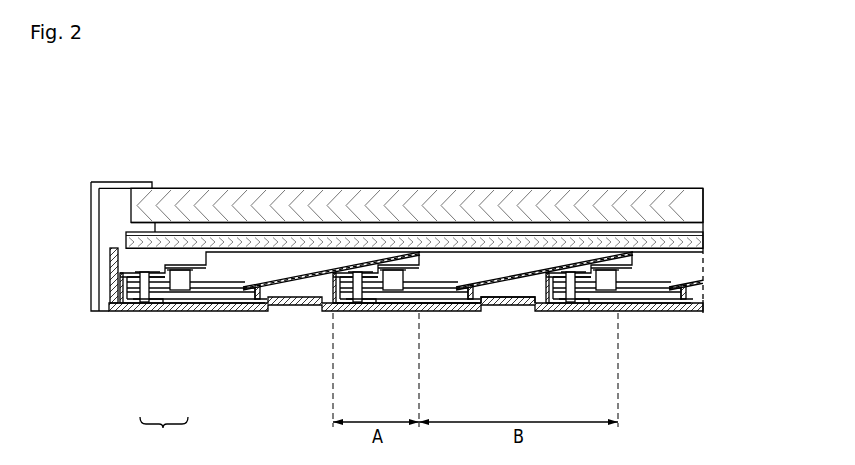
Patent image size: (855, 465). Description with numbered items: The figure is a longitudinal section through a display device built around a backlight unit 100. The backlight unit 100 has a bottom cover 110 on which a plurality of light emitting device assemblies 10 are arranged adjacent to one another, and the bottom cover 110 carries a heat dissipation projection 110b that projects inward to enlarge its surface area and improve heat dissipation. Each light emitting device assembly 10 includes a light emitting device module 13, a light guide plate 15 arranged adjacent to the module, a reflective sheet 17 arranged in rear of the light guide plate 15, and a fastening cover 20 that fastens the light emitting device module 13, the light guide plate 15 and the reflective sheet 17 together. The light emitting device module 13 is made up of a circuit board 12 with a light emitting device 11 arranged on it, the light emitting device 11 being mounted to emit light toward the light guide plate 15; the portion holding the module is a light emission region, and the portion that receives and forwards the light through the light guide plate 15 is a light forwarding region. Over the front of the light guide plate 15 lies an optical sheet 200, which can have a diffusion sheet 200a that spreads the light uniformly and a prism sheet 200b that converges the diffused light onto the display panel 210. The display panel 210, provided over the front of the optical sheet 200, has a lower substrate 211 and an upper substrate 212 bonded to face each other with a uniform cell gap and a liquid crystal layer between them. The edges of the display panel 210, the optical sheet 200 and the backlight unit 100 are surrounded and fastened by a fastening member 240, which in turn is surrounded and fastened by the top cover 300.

The light emitting device assembly 10 is at (206, 287).
The light emitting device 11 is at (183, 283).
The circuit board 12 is at (152, 303).
The light emitting device module 13 is at (164, 436).
The light guide plate 15 is at (225, 282).
The reflective sheet 17 is at (257, 300).
The fastening cover 20 is at (110, 286).
The backlight unit 100 is at (298, 318).
The bottom cover 110 is at (373, 311).
The heat dissipation projection 110b is at (507, 306).
The optical sheet 200 is at (771, 213).
The diffusion sheet 200a is at (700, 247).
The prism sheet 200b is at (700, 237).
The display panel 210 is at (540, 143).
The lower substrate 211 is at (541, 218).
The upper substrate 212 is at (477, 202).
The fastening member 240 is at (104, 311).
The top cover 300 is at (131, 182).